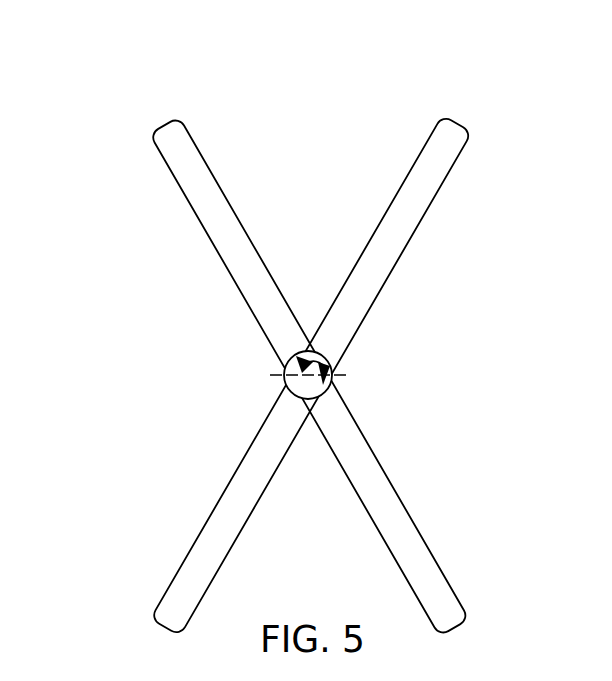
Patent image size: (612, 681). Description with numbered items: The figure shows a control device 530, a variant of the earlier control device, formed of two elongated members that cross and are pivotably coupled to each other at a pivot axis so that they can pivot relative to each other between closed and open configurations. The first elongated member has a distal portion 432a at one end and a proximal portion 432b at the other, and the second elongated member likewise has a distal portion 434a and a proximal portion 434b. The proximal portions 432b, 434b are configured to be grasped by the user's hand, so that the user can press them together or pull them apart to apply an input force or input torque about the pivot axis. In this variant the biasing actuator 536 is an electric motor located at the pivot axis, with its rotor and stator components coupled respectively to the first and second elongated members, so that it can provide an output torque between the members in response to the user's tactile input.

The control device 530 is at (153, 78).
The distal portion of the first elongated member 432a is at (383, 287).
The proximal portion of the first elongated member 432b is at (190, 540).
The distal portion of the second elongated member 434a is at (152, 140).
The proximal portion of the second elongated member 434b is at (434, 543).
The biasing actuator 536 is at (300, 353).